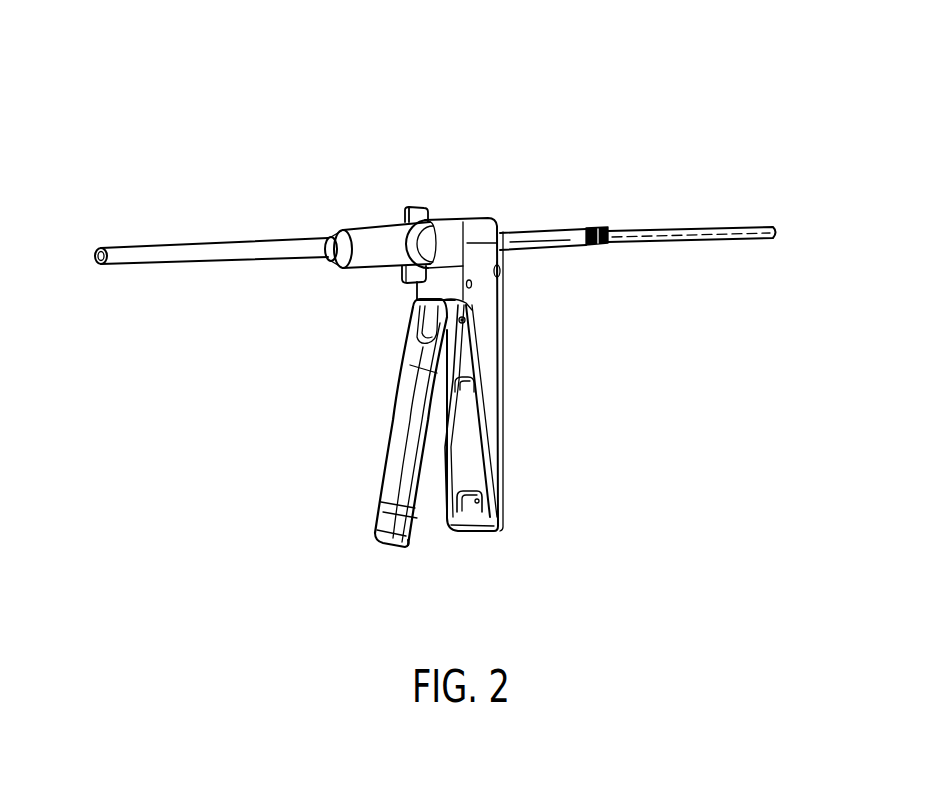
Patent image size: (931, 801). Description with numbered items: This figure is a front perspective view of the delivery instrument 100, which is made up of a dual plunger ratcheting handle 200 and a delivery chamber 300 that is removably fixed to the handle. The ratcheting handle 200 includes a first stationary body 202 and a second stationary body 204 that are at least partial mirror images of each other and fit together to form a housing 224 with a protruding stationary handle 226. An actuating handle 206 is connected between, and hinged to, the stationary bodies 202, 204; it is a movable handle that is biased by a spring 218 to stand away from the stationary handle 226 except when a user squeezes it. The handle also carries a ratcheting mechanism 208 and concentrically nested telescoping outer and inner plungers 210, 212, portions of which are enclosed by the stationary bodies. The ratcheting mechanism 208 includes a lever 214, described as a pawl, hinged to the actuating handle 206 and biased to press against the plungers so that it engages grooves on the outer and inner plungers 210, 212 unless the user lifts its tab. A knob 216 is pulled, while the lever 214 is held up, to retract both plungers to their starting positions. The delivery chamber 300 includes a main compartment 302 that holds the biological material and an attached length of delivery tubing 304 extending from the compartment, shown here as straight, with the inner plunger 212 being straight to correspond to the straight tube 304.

The delivery instrument 100 is at (350, 68).
The dual plunger ratcheting handle 200 is at (443, 182).
The first stationary body 202 is at (503, 344).
The second stationary body 204 is at (439, 477).
The actuating handle 206 is at (390, 420).
The ratcheting mechanism 208 is at (534, 275).
The outer plunger 210 is at (537, 232).
The inner plunger 212 is at (667, 229).
The lever 214 is at (500, 277).
The knob 216 is at (606, 249).
The spring 218 is at (470, 366).
The housing 224 is at (468, 222).
The stationary handle 226 is at (472, 538).
The delivery chamber 300 is at (362, 201).
The main compartment 302 is at (378, 228).
The delivery tubing 304 is at (189, 263).